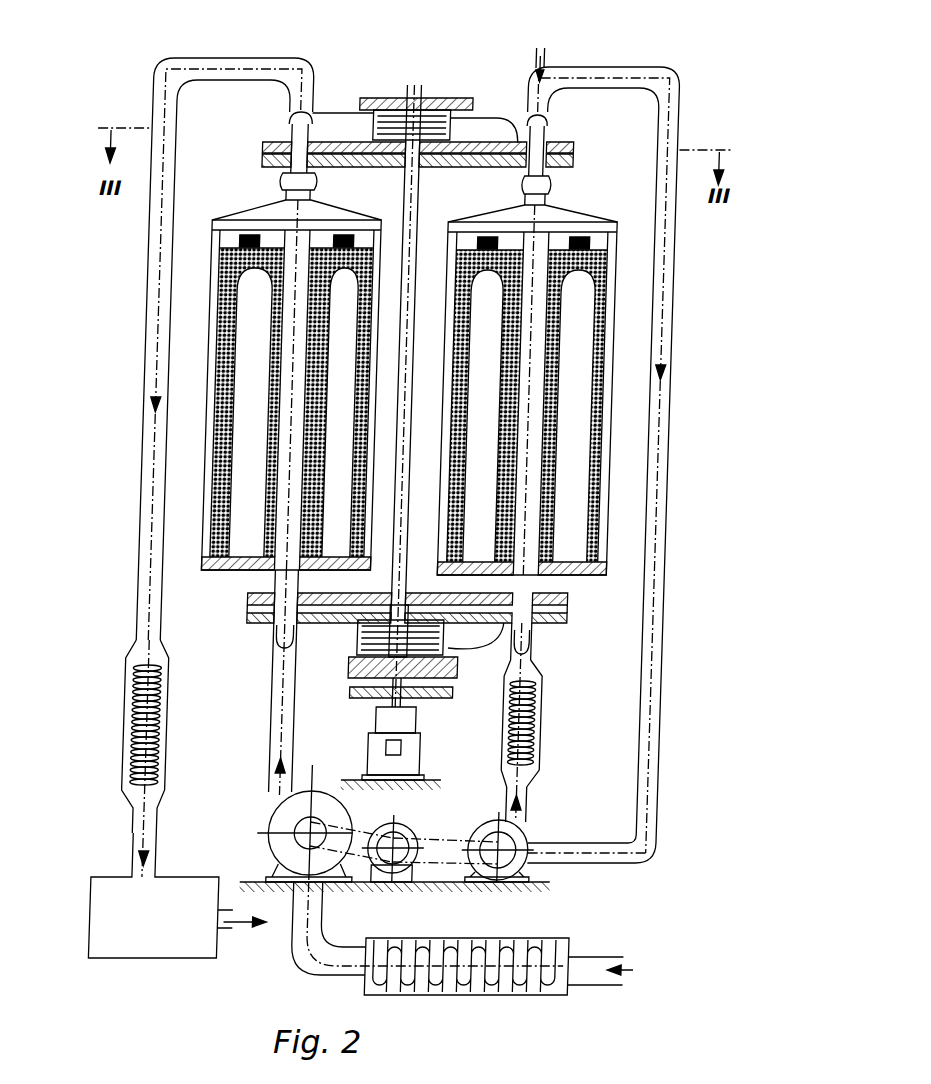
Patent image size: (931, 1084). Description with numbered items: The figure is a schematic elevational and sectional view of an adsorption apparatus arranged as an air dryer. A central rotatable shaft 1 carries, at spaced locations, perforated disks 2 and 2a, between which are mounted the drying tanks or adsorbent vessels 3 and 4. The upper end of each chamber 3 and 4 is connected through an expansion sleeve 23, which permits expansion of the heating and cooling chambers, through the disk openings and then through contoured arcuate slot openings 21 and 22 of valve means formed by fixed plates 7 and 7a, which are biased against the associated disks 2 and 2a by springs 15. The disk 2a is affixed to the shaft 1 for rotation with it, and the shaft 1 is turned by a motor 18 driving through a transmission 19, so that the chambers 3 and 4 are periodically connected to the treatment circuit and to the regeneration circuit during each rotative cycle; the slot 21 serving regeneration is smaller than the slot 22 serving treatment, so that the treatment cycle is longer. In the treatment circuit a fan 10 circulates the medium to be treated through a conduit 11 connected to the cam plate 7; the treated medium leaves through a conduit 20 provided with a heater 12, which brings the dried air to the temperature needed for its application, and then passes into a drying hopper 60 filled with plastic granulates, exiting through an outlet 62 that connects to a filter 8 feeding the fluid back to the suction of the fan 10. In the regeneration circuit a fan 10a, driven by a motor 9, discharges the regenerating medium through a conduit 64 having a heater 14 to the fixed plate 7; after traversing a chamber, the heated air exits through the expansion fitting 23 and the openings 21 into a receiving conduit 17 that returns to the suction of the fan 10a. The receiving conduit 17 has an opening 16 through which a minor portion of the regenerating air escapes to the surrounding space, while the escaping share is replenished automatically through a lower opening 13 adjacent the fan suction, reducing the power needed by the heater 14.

The central rotatable shaft 1 is at (422, 414).
The perforated disk 2 is at (584, 601).
The perforated disk 2a is at (577, 166).
The drying tank 3 is at (341, 390).
The drying tank 4 is at (488, 396).
The fixed plate 7 is at (586, 620).
The fixed plate 7a is at (576, 150).
The filter 8 is at (477, 945).
The motor 9 is at (420, 893).
The fan 10 is at (291, 812).
The fan 10a is at (536, 882).
The conduit 11 is at (290, 718).
The heater 12 is at (168, 677).
The lower opening 13 is at (684, 853).
The heater 14 is at (561, 703).
The spring 15 is at (378, 98).
The opening 16 is at (539, 50).
The receiving conduit 17 is at (549, 104).
The motor 18 is at (441, 743).
The transmission 19 is at (472, 693).
The conduit 20 is at (279, 58).
The arcuate slot opening 21 is at (547, 151).
The arcuate slot opening 22 is at (288, 140).
The expansion sleeve 23 is at (283, 180).
The drying hopper 60 is at (138, 877).
The outlet 62 is at (261, 930).
The conduit 64 is at (549, 786).